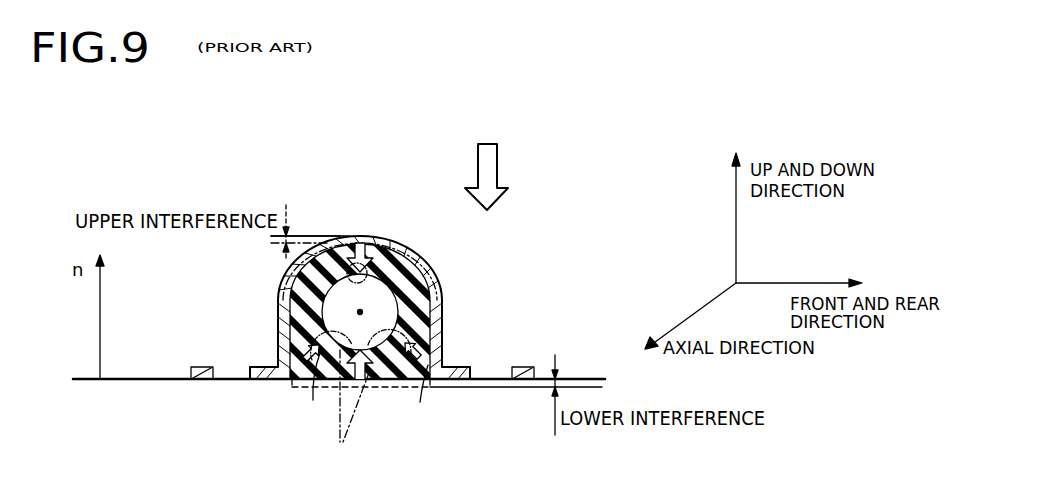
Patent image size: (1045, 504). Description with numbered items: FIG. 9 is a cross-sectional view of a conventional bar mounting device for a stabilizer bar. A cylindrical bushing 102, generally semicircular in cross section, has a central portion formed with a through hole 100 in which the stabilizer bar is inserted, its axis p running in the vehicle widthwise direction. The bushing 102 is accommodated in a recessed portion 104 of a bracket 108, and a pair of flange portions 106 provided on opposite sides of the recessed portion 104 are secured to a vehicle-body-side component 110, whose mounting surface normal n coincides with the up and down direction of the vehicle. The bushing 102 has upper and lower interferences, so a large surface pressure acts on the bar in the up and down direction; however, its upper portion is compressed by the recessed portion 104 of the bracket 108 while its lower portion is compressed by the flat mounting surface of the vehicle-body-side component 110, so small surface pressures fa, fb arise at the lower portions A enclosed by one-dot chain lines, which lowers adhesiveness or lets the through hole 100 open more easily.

The through hole 100 is at (352, 243).
The bushing 102 is at (303, 318).
The recessed portion 104 is at (436, 272).
The flange portions 106 is at (472, 369).
The bracket 108 is at (452, 316).
The vehicle-body-side component 110 is at (157, 390).